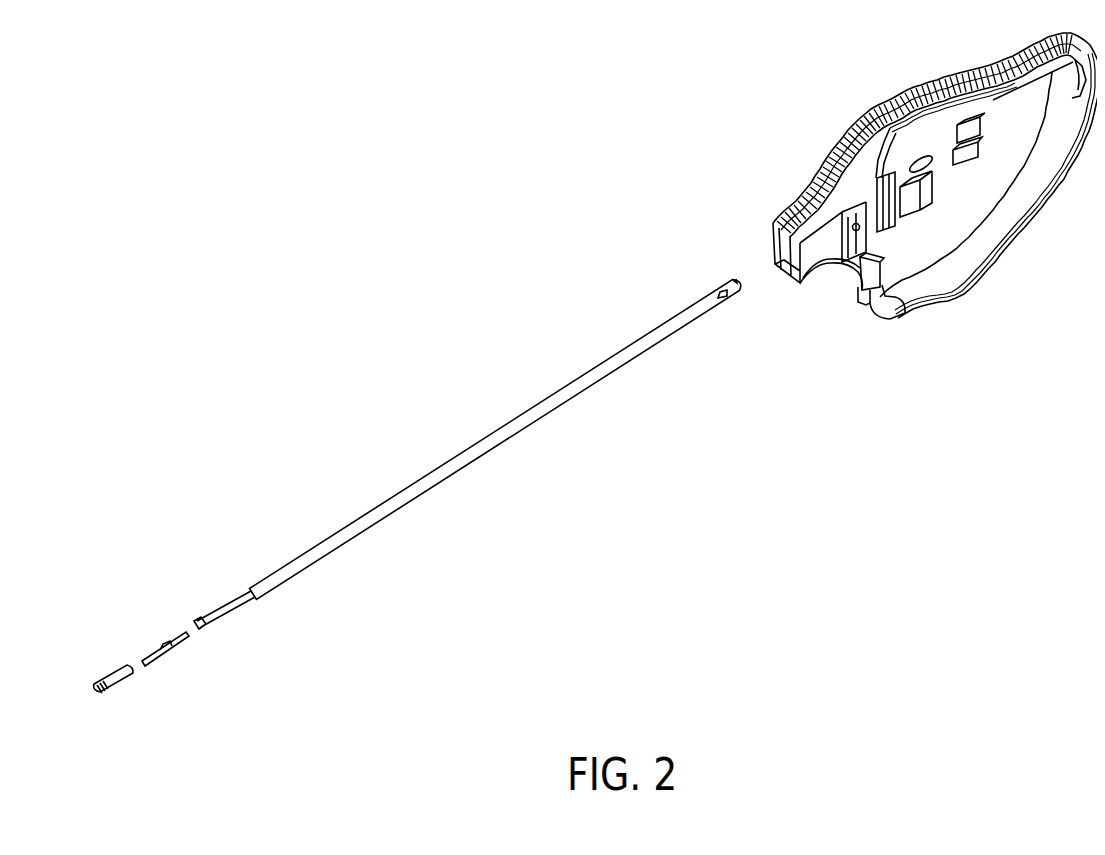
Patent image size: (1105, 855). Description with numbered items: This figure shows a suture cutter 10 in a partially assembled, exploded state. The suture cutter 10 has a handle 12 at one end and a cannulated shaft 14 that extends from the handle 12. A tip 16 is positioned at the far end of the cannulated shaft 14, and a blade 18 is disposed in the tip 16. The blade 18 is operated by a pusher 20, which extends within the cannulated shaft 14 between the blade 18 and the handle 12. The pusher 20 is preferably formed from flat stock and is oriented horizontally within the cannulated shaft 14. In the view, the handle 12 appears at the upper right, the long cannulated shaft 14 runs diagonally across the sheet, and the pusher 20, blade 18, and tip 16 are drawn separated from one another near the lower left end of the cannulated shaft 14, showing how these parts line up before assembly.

The suture cutter 10 is at (512, 135).
The handle 12 is at (893, 97).
The cannulated shaft 14 is at (490, 433).
The tip 16 is at (124, 684).
The blade 18 is at (173, 651).
The pusher 20 is at (233, 616).